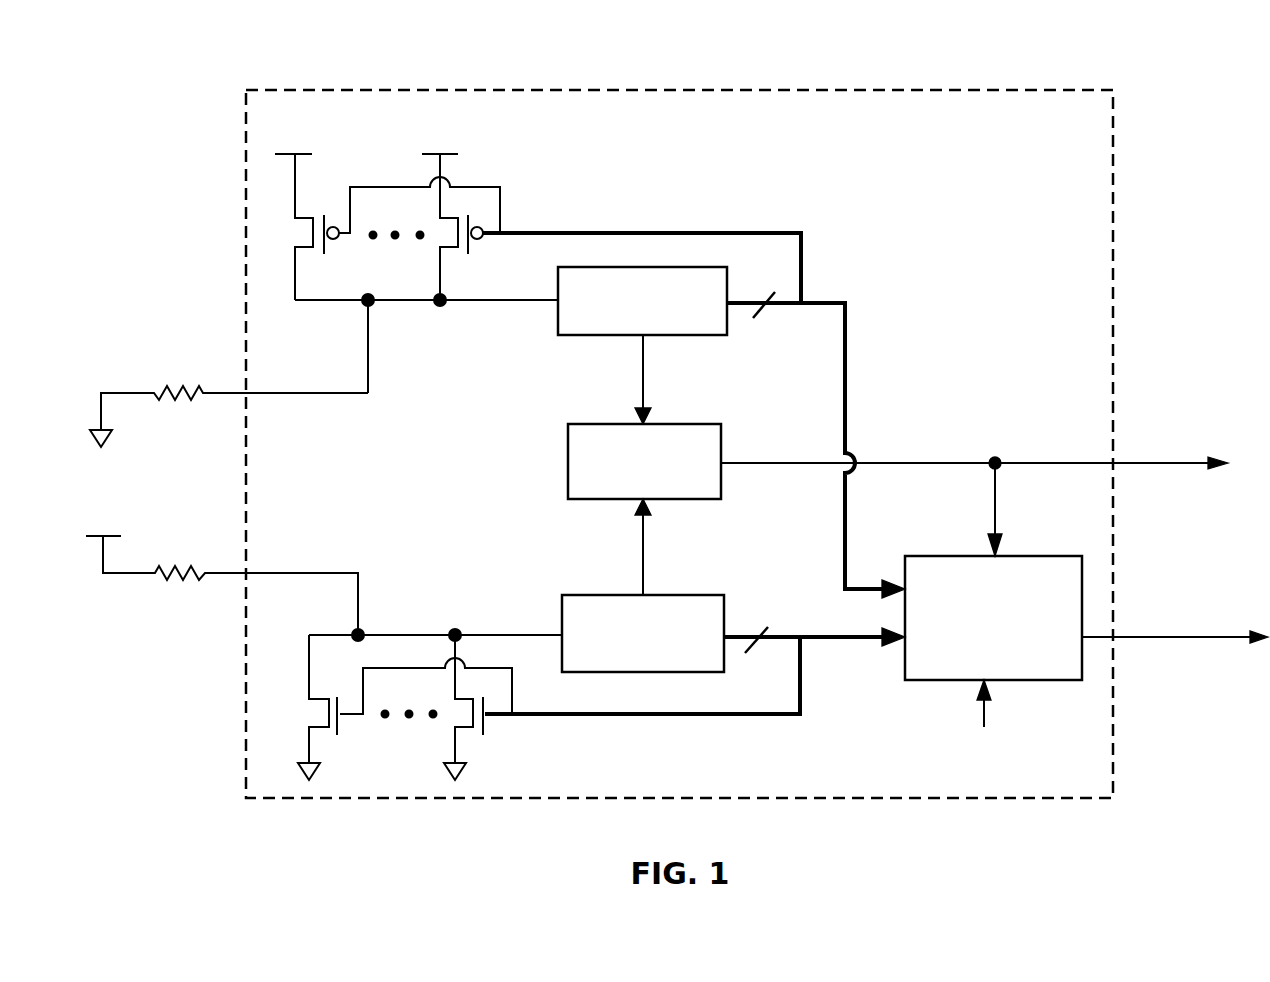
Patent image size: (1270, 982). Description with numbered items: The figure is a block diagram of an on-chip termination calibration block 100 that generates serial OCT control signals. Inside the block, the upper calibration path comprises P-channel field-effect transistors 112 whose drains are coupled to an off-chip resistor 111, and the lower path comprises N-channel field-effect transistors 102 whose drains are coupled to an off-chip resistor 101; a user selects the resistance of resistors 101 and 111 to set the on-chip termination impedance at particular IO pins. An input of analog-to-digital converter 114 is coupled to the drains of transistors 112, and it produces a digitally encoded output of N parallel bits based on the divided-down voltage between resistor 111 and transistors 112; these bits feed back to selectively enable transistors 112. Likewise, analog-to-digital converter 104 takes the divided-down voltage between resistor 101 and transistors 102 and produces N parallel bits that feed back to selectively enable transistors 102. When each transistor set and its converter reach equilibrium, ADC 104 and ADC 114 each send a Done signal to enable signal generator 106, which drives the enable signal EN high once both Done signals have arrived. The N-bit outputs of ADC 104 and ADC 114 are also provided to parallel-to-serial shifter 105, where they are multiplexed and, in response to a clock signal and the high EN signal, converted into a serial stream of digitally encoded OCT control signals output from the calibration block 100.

The OCT calibration block 100 is at (1003, 90).
The off-chip resistor 101 is at (185, 565).
The N-channel field-effect transistors 102 is at (340, 724).
The analog-to-digital converter 104 is at (573, 595).
The parallel-to-serial shifter 105 is at (927, 680).
The enable signal generator 106 is at (568, 478).
The off-chip resistor 111 is at (182, 385).
The P-channel field-effect transistors 112 is at (331, 249).
The analog-to-digital converter 114 is at (557, 323).